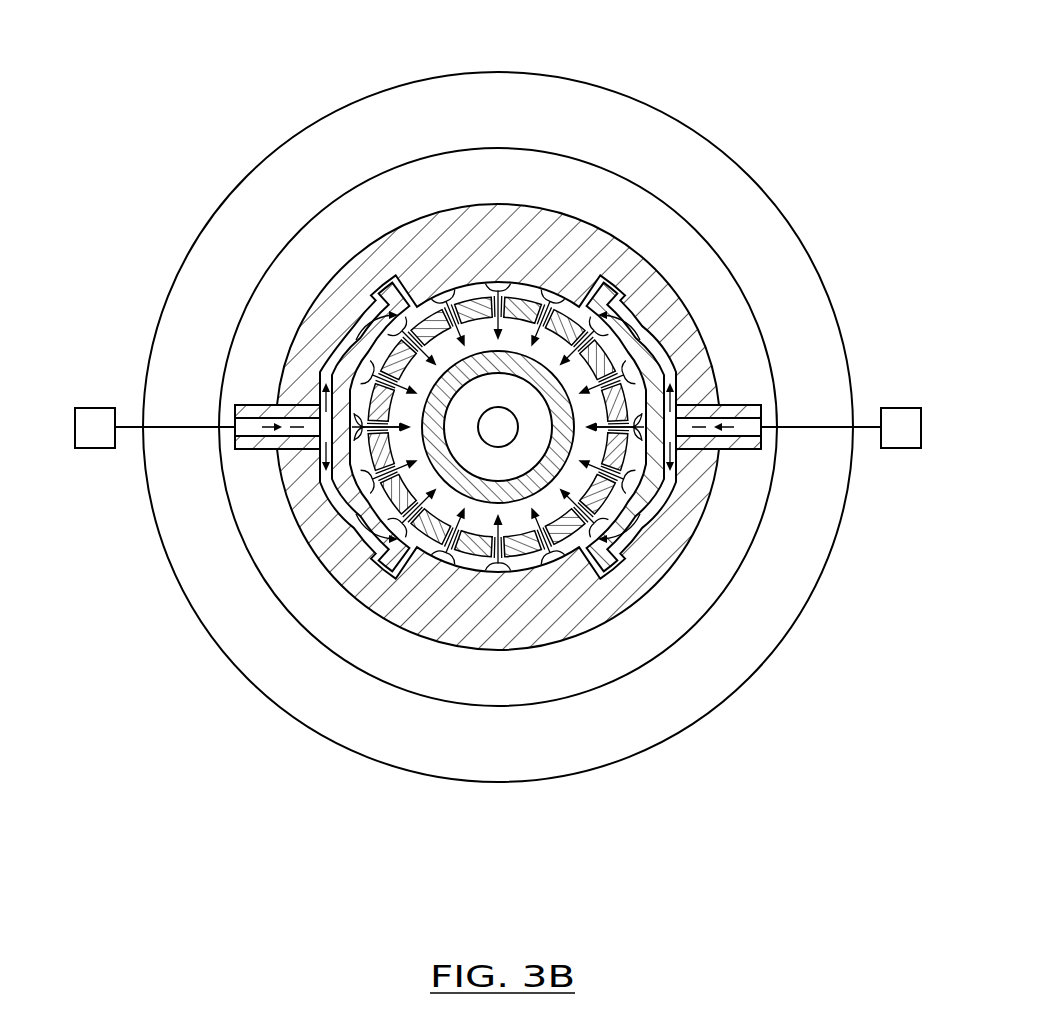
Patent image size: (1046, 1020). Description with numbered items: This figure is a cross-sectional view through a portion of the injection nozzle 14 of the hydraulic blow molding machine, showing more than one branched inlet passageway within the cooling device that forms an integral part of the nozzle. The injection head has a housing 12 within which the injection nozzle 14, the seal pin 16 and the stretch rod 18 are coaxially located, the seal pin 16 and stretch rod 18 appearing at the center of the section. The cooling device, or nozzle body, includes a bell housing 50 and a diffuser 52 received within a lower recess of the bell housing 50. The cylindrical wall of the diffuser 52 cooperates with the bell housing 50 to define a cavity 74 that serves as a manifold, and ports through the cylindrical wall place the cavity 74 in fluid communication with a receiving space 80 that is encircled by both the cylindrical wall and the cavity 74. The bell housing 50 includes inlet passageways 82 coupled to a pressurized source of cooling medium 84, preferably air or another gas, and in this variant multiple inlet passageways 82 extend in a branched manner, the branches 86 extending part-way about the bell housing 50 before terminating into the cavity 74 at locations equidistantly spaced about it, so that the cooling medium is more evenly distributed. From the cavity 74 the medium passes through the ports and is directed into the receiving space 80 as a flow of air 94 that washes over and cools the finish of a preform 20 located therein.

The housing 12 is at (408, 118).
The injection nozzle 14 is at (553, 177).
The seal pin 16 is at (497, 390).
The stretch rod 18 is at (593, 540).
The preform 20 is at (487, 493).
The bell housing 50 is at (607, 260).
The diffuser 52 is at (503, 432).
The cavity 74 is at (508, 557).
The receiving space 80 is at (408, 310).
The inlet passageway 82 is at (252, 405).
The pressurized source of cooling medium 84 is at (92, 407).
The branches 86 is at (324, 400).
The flow of air 94 is at (262, 448).